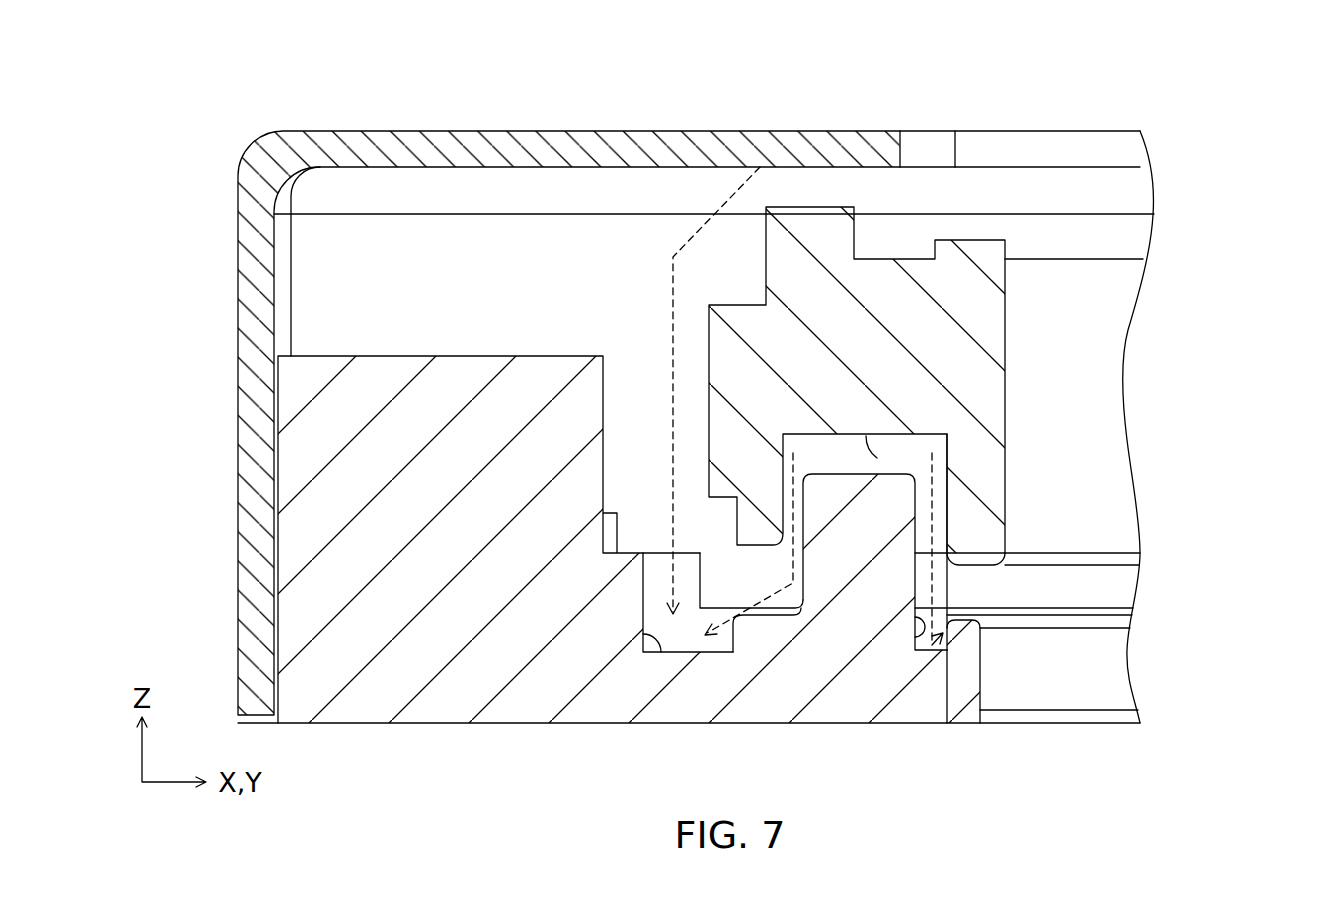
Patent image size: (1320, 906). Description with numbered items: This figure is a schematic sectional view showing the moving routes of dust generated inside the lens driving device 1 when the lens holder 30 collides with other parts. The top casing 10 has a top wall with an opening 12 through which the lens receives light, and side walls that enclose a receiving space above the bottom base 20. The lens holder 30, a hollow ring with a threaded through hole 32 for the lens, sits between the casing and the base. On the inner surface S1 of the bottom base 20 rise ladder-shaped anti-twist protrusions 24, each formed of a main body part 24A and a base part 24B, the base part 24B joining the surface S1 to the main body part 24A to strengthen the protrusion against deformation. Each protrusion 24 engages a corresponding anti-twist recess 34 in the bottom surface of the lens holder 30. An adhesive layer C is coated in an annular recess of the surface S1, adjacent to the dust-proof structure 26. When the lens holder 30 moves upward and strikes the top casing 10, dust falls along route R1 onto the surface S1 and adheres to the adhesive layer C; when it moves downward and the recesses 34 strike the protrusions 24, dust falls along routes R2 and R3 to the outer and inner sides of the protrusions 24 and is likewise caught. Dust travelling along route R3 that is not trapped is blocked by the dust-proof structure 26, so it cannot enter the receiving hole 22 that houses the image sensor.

The lens driving device 1 is at (196, 59).
The top casing 10 is at (398, 121).
The opening 12 is at (903, 148).
The bottom base 20 is at (403, 734).
The receiving hole 22 is at (967, 632).
The anti-twist protrusion 24 is at (1252, 43).
The main body part 24A is at (863, 540).
The base part 24B is at (768, 635).
The dust-proof structure 26 is at (987, 635).
The lens holder 30 is at (814, 243).
The through hole 32 is at (1007, 349).
The anti-twist recess 34 is at (877, 458).
The moving route R1 is at (696, 390).
The moving route R2 is at (749, 544).
The moving route R3 is at (953, 549).
The inner surface S1 is at (643, 635).
The adhesive layer C is at (690, 652).